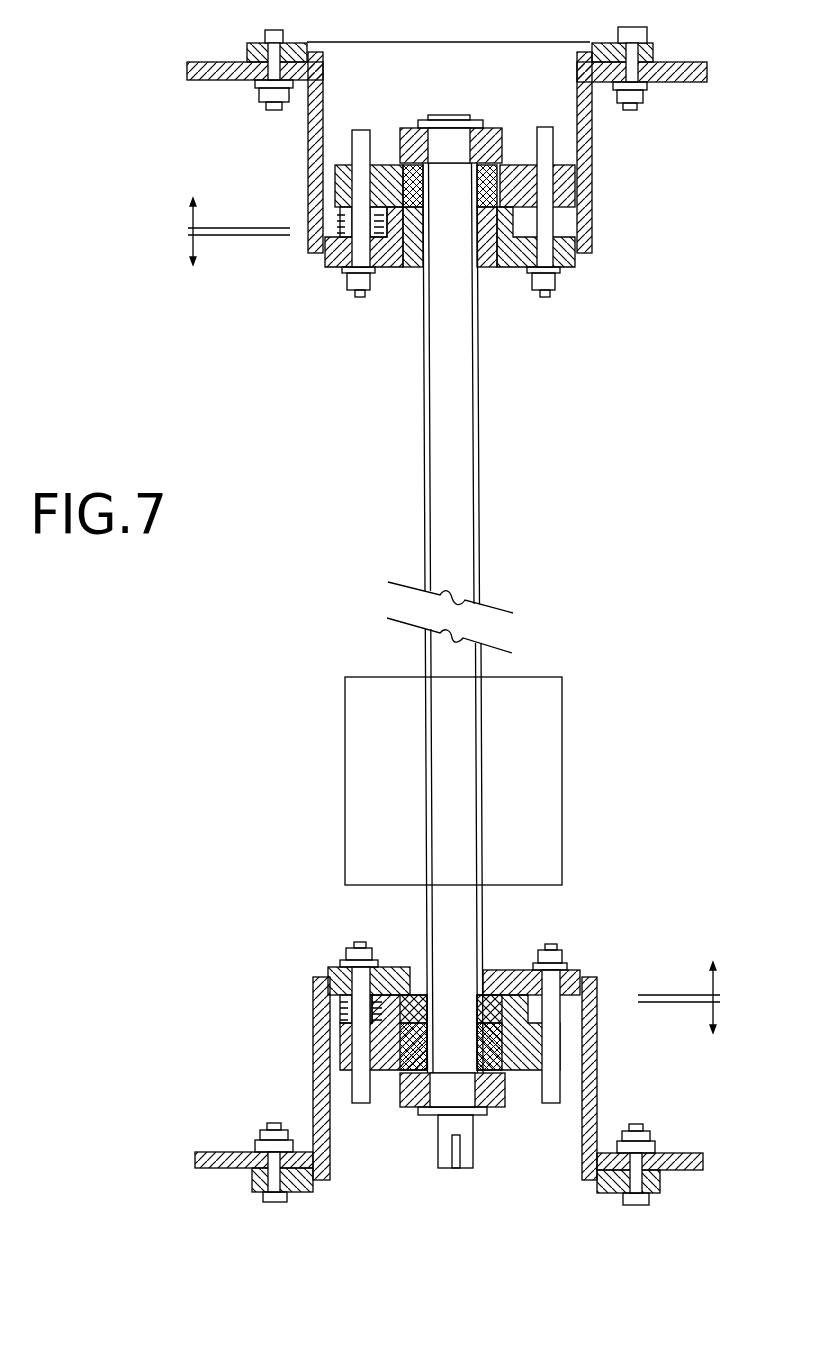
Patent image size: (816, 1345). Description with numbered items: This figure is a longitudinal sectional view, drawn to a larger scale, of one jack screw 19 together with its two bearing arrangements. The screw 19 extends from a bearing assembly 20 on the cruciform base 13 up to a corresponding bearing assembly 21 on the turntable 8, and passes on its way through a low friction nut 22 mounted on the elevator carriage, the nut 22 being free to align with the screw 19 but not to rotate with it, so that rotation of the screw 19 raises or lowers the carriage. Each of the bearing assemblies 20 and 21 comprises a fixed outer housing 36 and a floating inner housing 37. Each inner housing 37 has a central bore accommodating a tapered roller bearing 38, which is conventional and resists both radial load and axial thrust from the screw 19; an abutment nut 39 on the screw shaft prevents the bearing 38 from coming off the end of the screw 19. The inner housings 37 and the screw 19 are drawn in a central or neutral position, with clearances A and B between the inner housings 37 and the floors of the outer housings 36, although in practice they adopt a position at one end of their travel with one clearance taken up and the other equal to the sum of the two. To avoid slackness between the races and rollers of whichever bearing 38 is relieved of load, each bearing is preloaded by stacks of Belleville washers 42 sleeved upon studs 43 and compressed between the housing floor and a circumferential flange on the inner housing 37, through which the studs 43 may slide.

The turntable 8 is at (212, 63).
The cruciform base 13 is at (223, 1170).
The jack screw 19 is at (467, 323).
The bearing assembly 20 is at (287, 1030).
The bearing assembly 21 is at (300, 262).
The low friction nut 22 is at (357, 722).
The fixed outer housing 36 is at (583, 97).
The floating inner housing 37 is at (567, 205).
The tapered roller bearing 38 is at (487, 153).
The abutment nut 39 is at (403, 128).
The Belleville washer 42 is at (350, 215).
The stud 43 is at (352, 150).